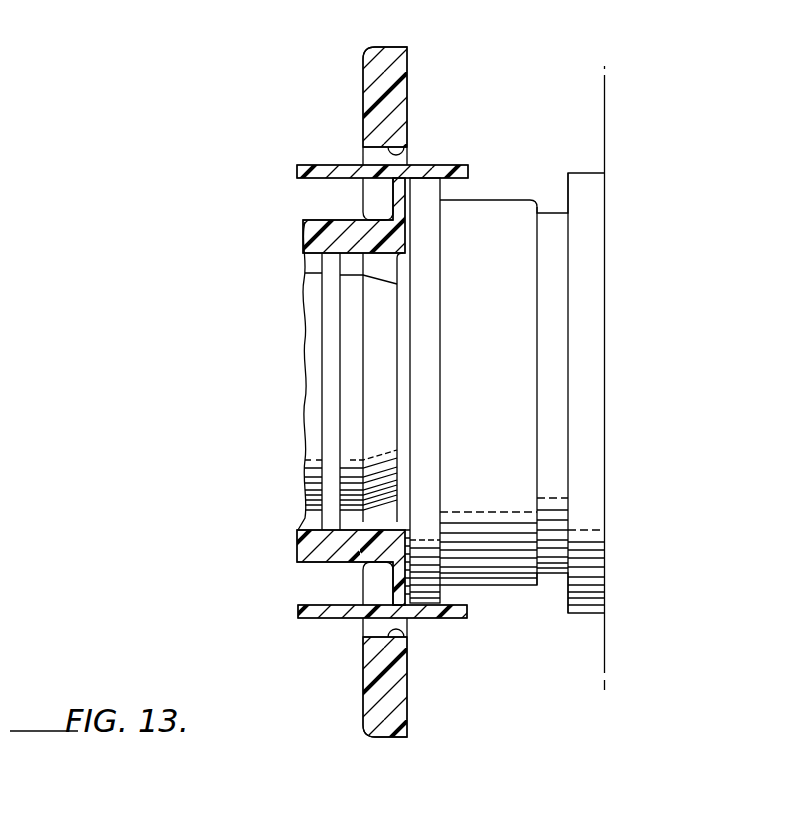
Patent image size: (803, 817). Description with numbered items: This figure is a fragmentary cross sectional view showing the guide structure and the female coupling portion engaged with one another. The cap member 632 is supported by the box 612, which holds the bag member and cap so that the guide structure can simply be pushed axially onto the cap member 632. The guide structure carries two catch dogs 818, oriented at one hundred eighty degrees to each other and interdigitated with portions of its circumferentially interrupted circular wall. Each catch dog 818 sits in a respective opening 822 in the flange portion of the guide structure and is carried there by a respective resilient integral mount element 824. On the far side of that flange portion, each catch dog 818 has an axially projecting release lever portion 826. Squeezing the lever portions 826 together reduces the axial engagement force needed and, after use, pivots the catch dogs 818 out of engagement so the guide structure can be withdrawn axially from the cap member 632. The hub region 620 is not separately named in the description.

The box 612 is at (604, 98).
The hub 620 is at (297, 227).
The cap member 632 is at (550, 502).
The catch dog 818 is at (445, 180).
The opening 822 is at (407, 150).
The resilient integral mount element 824 is at (393, 200).
The release lever portion 826 is at (318, 166).